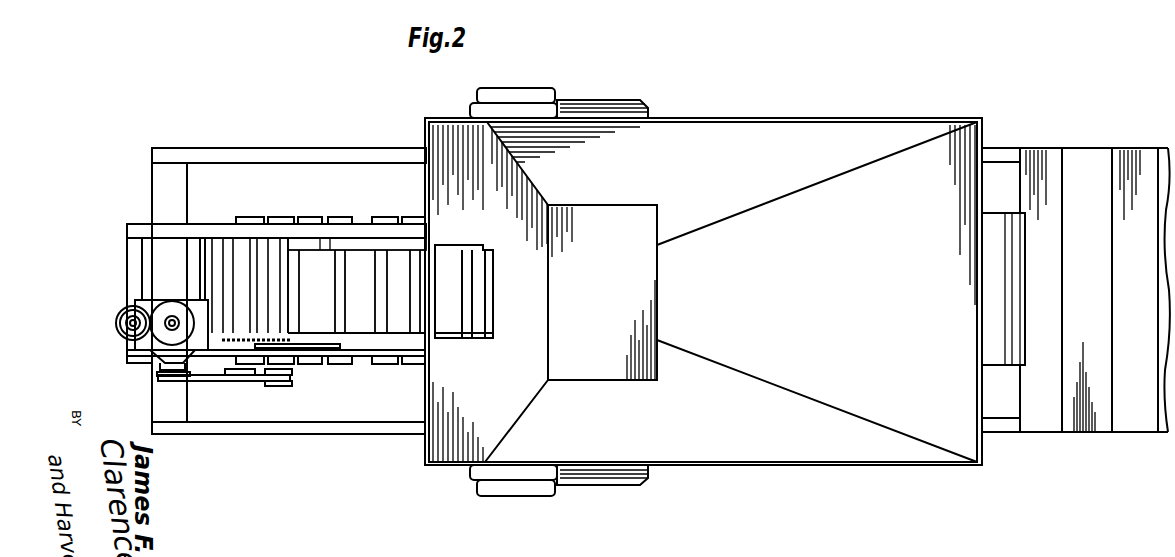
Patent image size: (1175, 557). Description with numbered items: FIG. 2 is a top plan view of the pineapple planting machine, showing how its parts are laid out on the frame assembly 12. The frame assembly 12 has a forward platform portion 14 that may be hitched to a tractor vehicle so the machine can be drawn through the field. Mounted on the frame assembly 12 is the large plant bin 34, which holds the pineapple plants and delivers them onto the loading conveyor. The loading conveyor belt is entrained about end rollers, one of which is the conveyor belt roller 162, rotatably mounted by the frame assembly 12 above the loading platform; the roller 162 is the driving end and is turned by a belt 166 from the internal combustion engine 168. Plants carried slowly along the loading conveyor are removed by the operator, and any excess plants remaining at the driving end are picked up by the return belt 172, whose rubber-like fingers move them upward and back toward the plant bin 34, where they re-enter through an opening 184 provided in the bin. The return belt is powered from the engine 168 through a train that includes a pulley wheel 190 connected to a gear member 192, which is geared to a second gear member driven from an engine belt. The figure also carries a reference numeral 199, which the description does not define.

The frame assembly 12 is at (330, 434).
The forward platform portion 14 is at (1131, 425).
The plant bin 34 is at (775, 440).
The conveyor belt roller 162 is at (278, 381).
The belt 166 is at (210, 382).
The internal combustion engine 168 is at (134, 349).
The return belt 172 is at (377, 337).
The opening 184 is at (490, 327).
The pulley wheel 190 is at (258, 348).
The gear member 192 is at (263, 335).
The bracket 199 is at (228, 343).